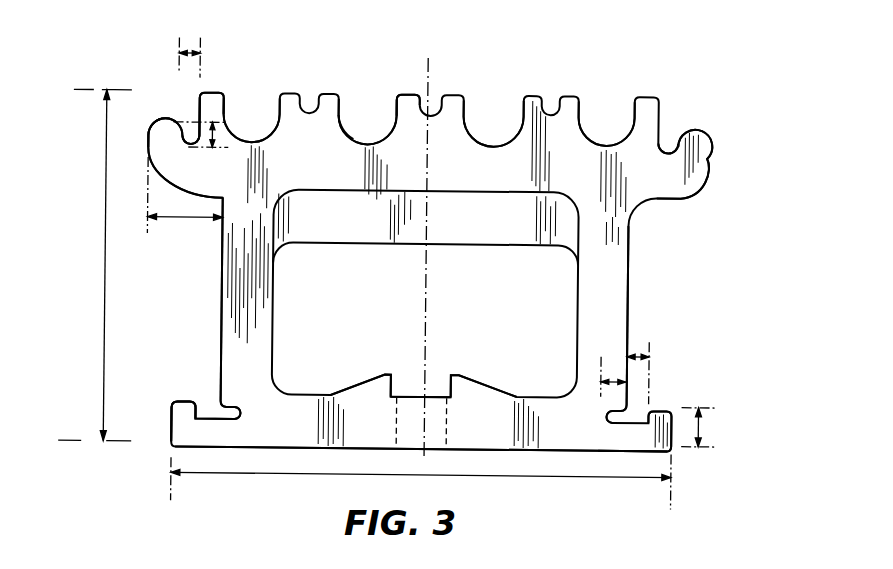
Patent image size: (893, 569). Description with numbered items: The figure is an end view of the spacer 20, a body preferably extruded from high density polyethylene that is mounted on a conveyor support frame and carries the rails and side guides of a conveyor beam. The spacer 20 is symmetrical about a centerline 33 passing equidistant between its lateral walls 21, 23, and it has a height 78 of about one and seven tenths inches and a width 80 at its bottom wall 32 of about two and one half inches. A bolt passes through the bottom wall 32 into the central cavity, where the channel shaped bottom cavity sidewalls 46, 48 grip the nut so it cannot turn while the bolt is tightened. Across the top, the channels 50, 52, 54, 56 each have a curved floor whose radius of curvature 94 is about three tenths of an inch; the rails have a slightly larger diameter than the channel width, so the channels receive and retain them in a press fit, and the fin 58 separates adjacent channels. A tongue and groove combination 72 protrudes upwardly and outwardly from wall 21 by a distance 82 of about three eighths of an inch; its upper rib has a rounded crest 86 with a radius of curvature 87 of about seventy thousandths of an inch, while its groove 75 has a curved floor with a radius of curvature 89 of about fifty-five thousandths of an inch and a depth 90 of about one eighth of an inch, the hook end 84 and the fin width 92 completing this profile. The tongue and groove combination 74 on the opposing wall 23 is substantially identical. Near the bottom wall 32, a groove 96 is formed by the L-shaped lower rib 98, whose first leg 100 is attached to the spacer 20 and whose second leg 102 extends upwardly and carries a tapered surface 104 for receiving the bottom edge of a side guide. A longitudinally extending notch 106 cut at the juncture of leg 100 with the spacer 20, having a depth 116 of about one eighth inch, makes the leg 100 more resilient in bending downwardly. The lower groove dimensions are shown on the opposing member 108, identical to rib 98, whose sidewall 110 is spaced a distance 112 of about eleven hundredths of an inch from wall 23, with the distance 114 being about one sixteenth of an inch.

The spacer 20 is at (650, 286).
The wall 21 is at (222, 308).
The wall 23 is at (632, 273).
The bottom wall portion 32 is at (490, 449).
The centerline 33 is at (431, 305).
The bottom cavity sidewall 46 is at (387, 375).
The bottom cavity sidewall 48 is at (453, 372).
The channel 50 is at (260, 129).
The channel 52 is at (377, 121).
The channel 54 is at (488, 123).
The channel 56 is at (603, 132).
The fin 58 is at (407, 90).
The tongue and groove combination 72 is at (150, 103).
The tongue and groove combination 74 is at (705, 125).
The groove 75 is at (186, 172).
The height 78 is at (107, 291).
The width 80 is at (530, 476).
The distance 82 is at (188, 222).
The hook end 84 is at (157, 140).
The rounded crest 86 is at (160, 121).
The radius of curvature 87 is at (160, 131).
The radius of curvature 89 is at (187, 133).
The depth 90 is at (221, 132).
The fin width 92 is at (189, 55).
The radius of curvature 94 is at (353, 136).
The groove 96 is at (212, 411).
The L-shaped lower rib 98 is at (178, 442).
The first leg 100 is at (235, 430).
The second leg 102 is at (172, 418).
The tapered surface 104 is at (186, 405).
The notch 106 is at (242, 414).
The opposing member 108 is at (662, 397).
The sidewall 110 is at (647, 456).
The distance 112 is at (640, 353).
The distance 114 is at (704, 427).
The depth 116 is at (610, 365).